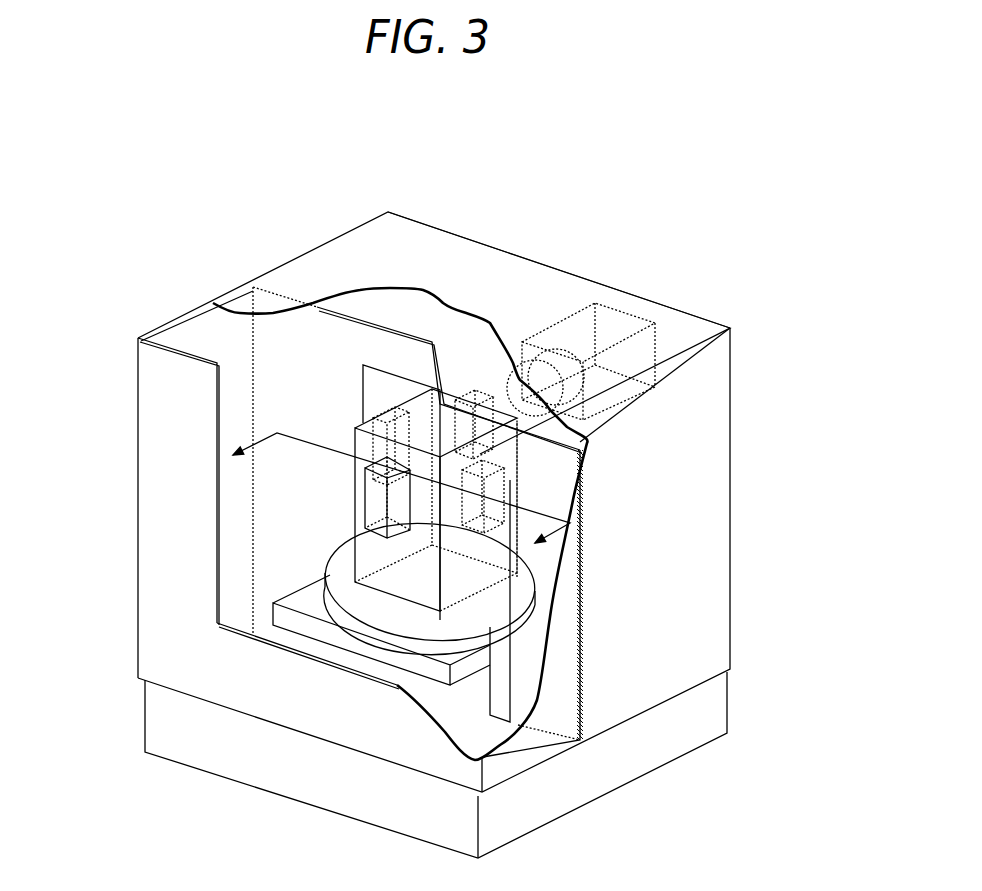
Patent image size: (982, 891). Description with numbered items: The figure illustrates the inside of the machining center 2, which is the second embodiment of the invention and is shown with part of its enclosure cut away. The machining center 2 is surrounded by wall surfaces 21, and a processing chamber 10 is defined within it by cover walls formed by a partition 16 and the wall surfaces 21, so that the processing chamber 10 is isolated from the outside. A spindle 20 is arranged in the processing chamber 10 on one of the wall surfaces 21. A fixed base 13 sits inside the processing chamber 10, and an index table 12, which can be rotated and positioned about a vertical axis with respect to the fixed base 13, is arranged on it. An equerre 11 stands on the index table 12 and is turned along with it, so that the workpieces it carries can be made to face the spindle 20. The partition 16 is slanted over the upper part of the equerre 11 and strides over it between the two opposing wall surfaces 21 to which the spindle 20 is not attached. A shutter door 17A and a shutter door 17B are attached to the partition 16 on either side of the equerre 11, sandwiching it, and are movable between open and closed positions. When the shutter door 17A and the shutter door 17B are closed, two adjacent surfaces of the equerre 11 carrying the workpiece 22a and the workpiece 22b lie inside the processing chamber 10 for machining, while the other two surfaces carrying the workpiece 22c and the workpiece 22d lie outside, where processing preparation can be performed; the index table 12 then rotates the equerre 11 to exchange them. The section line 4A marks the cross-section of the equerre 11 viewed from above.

The machining center 2 is at (520, 255).
The processing chamber 10 is at (427, 243).
The equerre 11 is at (378, 552).
The index table 12 is at (505, 612).
The fixed base 13 is at (505, 650).
The partition 16 is at (338, 327).
The shutter door 17A is at (390, 383).
The shutter door 17B is at (545, 552).
The spindle 20 is at (612, 328).
The wall surfaces 21 is at (158, 382).
The workpiece 22a is at (480, 393).
The workpiece 22b is at (505, 470).
The workpiece 22c is at (380, 503).
The workpiece 22d is at (380, 450).
The cross-section 4A is at (400, 483).